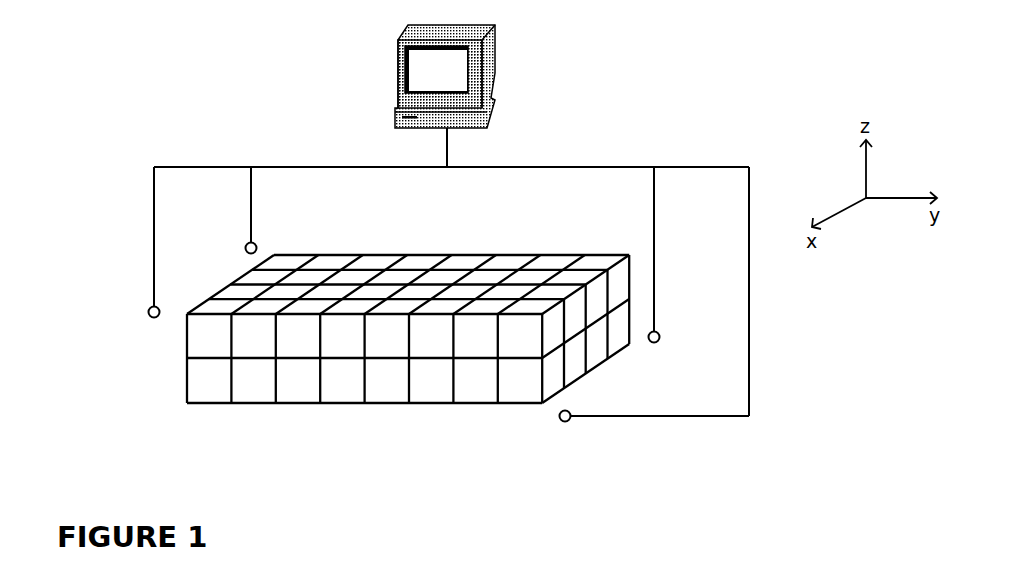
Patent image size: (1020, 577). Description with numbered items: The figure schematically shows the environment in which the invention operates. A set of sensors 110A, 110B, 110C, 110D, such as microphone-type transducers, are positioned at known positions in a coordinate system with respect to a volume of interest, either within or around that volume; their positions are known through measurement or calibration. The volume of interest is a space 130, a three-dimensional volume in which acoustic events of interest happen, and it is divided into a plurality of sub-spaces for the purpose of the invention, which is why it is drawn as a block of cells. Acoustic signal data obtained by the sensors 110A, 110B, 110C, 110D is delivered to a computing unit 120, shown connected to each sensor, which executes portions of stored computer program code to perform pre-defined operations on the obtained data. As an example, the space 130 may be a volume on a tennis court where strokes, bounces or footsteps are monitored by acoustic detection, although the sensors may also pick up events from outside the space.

The computing unit 120 is at (493, 98).
The sensor 110A is at (148, 308).
The sensor 110B is at (257, 244).
The sensor 110C is at (660, 333).
The sensor 110D is at (570, 420).
The space 130 is at (217, 404).